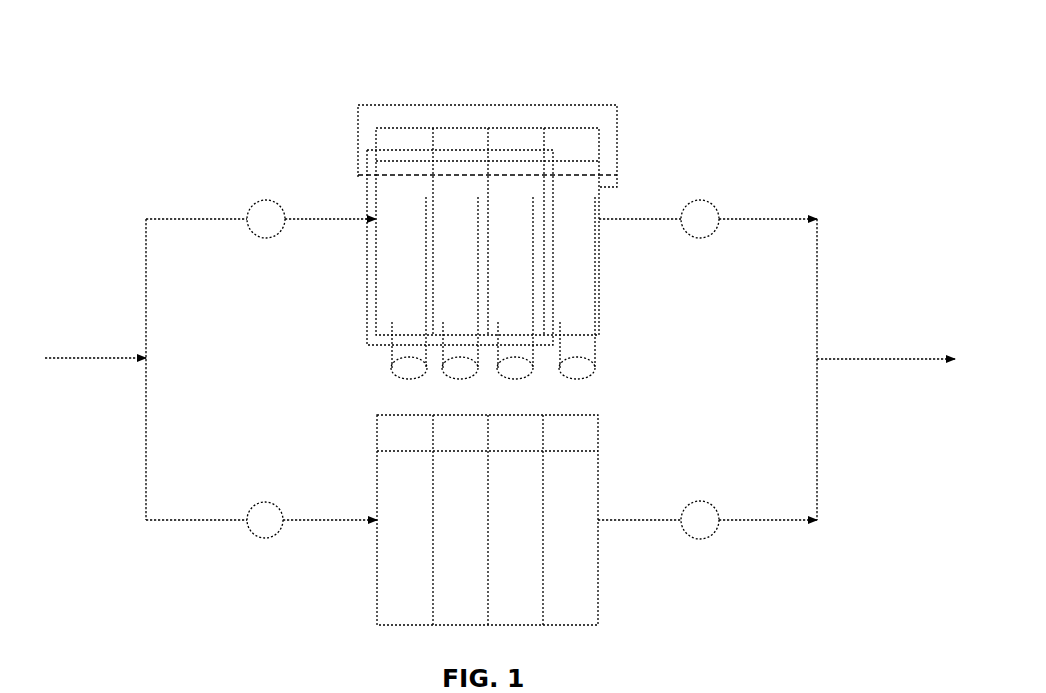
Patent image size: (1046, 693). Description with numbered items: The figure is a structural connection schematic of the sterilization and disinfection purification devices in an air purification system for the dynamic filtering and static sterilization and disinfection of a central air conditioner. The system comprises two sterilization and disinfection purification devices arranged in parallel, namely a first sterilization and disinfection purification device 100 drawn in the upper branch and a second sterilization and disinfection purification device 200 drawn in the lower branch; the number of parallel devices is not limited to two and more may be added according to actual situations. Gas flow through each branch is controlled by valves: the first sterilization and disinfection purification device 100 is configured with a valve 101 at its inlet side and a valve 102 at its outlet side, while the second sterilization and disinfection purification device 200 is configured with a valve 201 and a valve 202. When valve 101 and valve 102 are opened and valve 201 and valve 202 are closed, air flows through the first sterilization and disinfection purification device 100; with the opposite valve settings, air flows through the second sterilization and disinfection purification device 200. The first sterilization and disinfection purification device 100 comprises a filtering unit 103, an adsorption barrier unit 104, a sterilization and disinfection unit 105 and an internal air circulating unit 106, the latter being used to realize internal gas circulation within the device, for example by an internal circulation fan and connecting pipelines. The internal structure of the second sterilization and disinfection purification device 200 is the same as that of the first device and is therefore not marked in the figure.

The first sterilization and disinfection purification device 100 is at (622, 170).
The valve 101 is at (260, 198).
The valve 102 is at (717, 203).
The filtering unit 103 is at (368, 177).
The adsorption barrier unit 104 is at (573, 290).
The sterilization and disinfection unit 105 is at (440, 105).
The internal air circulating unit 106 is at (390, 363).
The second sterilization and disinfection purification device 200 is at (598, 488).
The valve 201 is at (265, 501).
The valve 202 is at (718, 506).